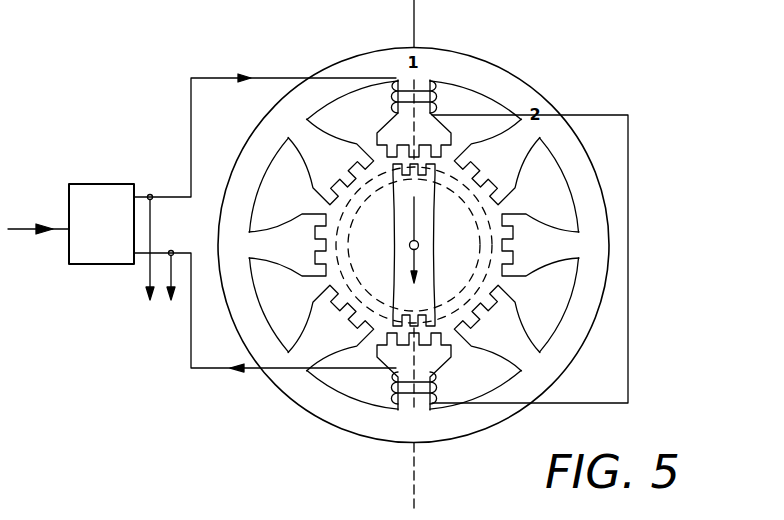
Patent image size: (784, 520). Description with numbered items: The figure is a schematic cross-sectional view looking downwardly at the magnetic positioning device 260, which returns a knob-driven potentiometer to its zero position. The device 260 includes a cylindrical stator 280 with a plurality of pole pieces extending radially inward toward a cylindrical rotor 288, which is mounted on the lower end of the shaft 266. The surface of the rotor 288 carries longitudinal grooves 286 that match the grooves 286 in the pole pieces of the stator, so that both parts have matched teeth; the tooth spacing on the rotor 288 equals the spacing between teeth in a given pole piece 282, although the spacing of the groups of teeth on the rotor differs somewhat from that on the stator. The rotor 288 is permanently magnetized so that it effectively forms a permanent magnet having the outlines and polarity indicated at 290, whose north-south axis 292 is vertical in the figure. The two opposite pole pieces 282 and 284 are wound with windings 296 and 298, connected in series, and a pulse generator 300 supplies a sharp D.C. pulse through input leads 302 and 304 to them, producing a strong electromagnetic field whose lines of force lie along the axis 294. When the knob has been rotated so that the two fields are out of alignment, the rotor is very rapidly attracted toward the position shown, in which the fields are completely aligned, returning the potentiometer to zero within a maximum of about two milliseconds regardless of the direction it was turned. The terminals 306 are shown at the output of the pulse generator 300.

The magnetic positioning device 260 is at (643, 108).
The lower end of the shaft 266 is at (409, 244).
The cylindrical stator 280 is at (526, 82).
The pole piece 282 is at (440, 118).
The pole piece 284 is at (440, 365).
The longitudinal grooves 286 is at (447, 154).
The cylindrical rotor 288 is at (504, 240).
The permanent magnet outlines and polarity 290 is at (419, 243).
The north-south axis 292 is at (418, 268).
The axis of the lines of force 294 is at (418, 32).
The winding 296 is at (443, 91).
The winding 298 is at (438, 390).
The pulse generator 300 is at (71, 224).
The input lead 302 is at (268, 78).
The input lead 304 is at (210, 368).
The output terminals 306 is at (177, 303).